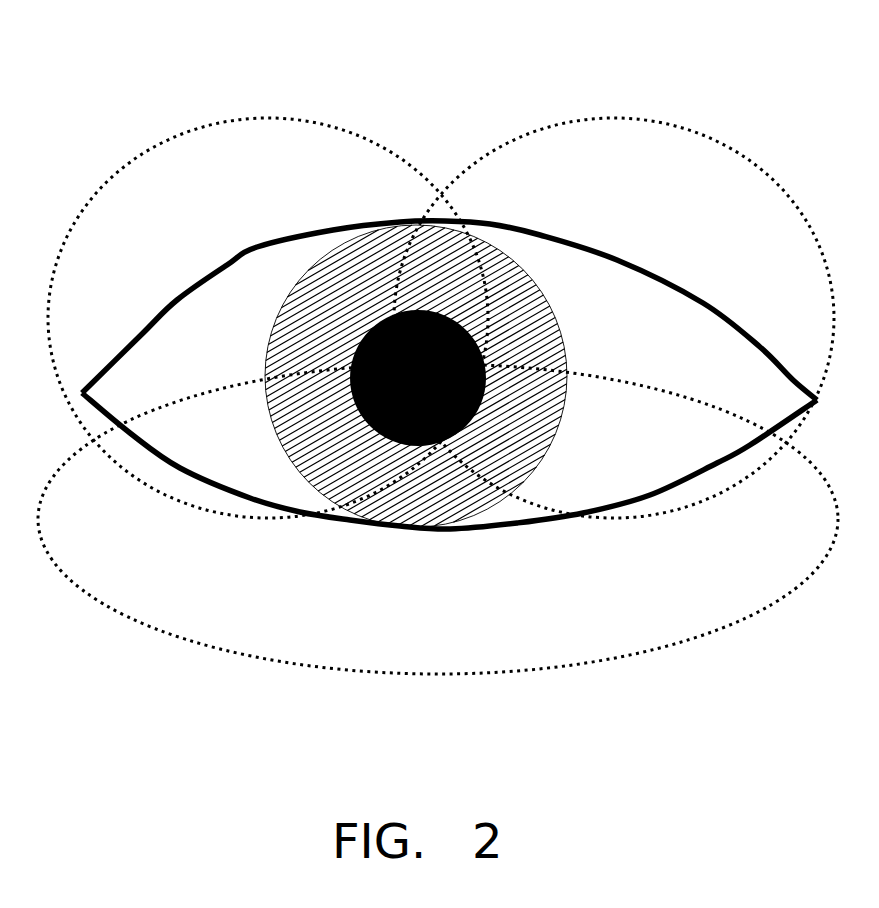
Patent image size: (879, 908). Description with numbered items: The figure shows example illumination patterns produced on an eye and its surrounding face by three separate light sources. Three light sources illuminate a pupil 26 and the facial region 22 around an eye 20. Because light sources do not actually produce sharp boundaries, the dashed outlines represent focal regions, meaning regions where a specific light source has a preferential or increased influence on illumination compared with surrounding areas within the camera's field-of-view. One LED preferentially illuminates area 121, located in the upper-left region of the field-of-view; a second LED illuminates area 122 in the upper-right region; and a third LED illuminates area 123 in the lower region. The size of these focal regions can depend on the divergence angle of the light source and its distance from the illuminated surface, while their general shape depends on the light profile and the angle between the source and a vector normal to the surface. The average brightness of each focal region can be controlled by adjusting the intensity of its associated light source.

The eye 20 is at (254, 251).
The facial region 22 is at (708, 207).
The pupil 26 is at (403, 447).
The area 121 is at (272, 108).
The area 122 is at (624, 108).
The area 123 is at (420, 678).